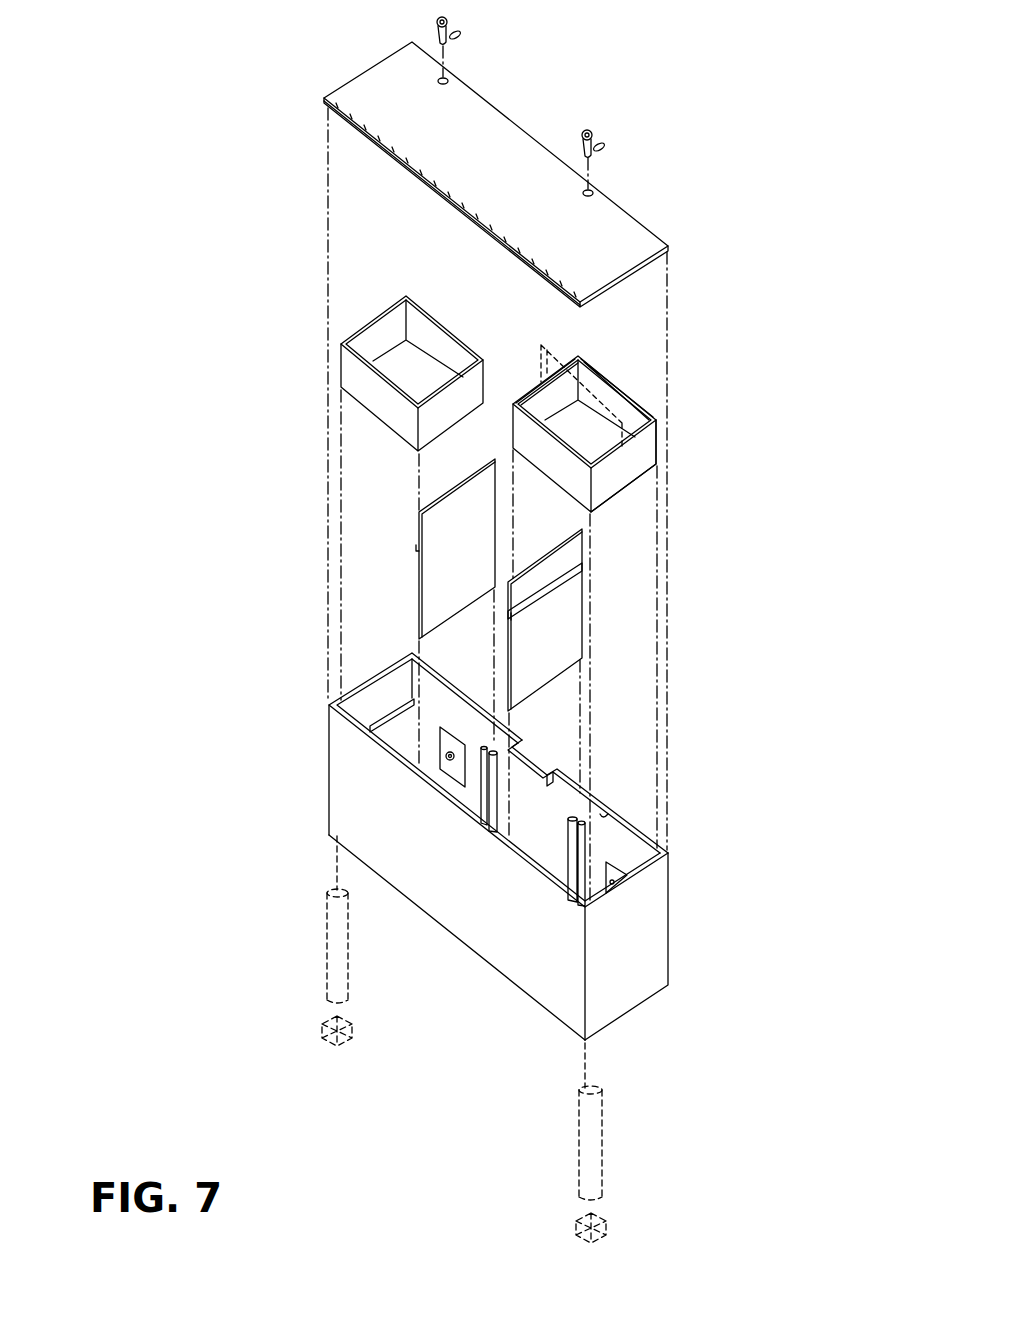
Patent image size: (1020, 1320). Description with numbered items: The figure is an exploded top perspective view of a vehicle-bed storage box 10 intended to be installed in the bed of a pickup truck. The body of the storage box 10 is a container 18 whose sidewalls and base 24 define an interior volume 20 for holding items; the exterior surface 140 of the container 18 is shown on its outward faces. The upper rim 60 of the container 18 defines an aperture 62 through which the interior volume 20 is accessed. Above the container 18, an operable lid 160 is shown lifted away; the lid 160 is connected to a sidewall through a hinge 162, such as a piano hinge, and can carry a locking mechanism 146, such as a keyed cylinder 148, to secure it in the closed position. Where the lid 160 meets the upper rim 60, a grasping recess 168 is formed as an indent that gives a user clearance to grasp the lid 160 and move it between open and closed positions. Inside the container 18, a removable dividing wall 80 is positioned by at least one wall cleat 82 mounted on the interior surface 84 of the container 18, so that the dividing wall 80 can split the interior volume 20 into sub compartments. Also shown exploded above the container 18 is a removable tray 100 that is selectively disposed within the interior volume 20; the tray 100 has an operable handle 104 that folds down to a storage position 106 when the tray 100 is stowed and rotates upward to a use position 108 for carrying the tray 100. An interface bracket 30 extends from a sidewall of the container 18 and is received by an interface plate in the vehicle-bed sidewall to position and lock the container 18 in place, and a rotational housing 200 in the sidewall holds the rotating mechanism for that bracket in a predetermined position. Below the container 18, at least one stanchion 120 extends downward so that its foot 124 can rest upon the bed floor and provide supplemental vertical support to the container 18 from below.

The vehicle-bed storage box 10 is at (294, 569).
The container 18 is at (328, 756).
The interior volume 20 is at (563, 798).
The base 24 is at (637, 1003).
The interface bracket 30 is at (451, 726).
The upper rim 60 is at (368, 676).
The aperture 62 is at (605, 815).
The removable dividing wall 80 is at (565, 622).
The wall cleat 82 is at (583, 848).
The interior surface 84 is at (546, 827).
The removable tray 100 is at (622, 476).
The operable handle 104 is at (632, 396).
The storage position 106 is at (668, 434).
The use position 108 is at (532, 357).
The stanchion 120 is at (580, 1134).
The foot 124 is at (575, 1223).
The exterior surface 140 is at (452, 909).
The locking mechanism 146 is at (460, 20).
The keyed cylinder 148 is at (597, 138).
The operable lid 160 is at (493, 147).
The hinge 162 is at (380, 150).
The grasping recess 168 is at (537, 757).
The rotational housing 200 is at (617, 871).